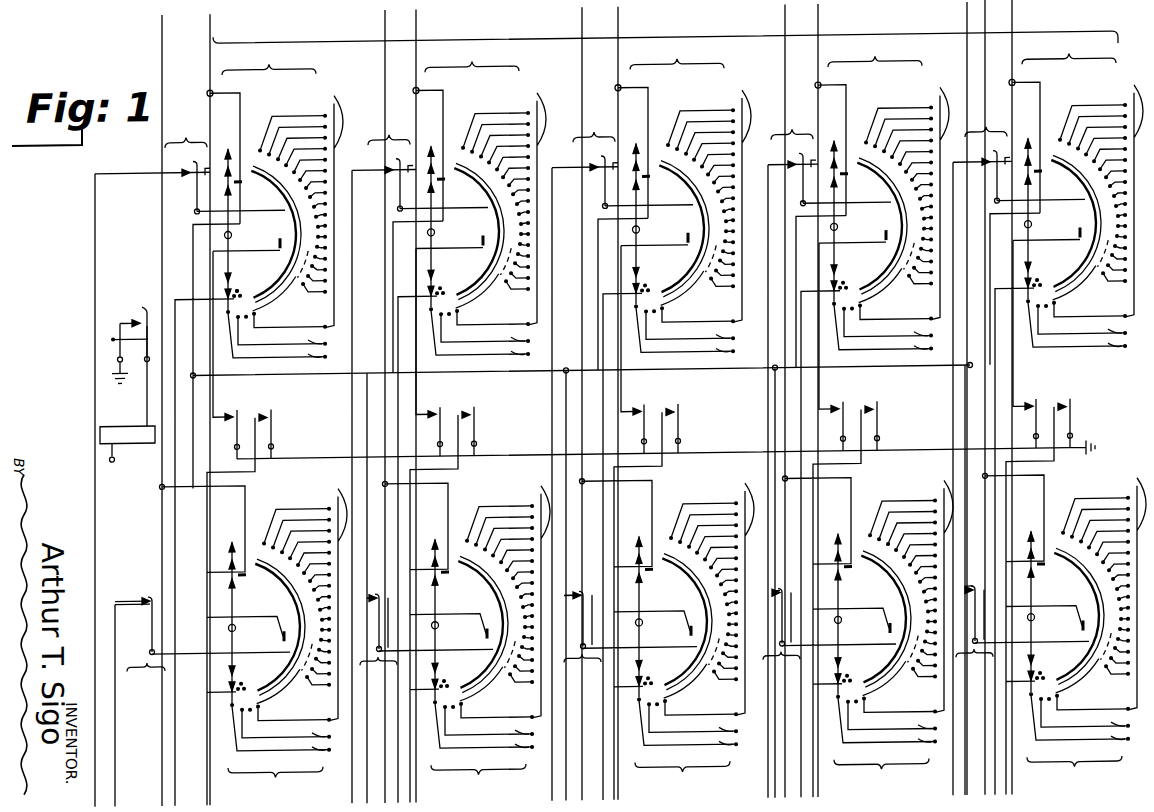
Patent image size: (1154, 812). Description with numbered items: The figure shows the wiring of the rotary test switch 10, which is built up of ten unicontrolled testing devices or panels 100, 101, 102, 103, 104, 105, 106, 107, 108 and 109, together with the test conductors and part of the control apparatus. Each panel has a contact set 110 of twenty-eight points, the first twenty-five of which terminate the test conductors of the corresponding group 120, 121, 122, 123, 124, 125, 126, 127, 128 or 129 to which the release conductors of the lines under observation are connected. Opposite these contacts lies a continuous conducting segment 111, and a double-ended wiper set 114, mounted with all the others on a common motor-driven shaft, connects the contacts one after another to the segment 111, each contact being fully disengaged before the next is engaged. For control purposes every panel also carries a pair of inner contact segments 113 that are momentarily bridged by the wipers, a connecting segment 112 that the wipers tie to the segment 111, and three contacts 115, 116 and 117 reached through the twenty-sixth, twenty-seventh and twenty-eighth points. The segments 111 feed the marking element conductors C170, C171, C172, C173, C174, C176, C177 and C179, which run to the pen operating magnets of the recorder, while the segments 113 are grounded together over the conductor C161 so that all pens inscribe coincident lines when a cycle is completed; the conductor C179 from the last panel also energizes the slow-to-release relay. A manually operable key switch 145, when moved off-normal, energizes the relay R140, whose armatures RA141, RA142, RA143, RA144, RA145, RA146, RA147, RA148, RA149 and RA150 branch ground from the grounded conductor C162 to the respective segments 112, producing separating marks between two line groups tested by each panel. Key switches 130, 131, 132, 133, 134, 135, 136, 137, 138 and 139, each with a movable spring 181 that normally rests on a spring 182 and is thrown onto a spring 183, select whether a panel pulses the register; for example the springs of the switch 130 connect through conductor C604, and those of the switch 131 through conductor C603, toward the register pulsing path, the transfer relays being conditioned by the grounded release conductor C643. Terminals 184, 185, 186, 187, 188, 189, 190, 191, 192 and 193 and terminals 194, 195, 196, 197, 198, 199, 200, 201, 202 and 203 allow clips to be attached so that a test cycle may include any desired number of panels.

The test switch 10 is at (664, 43).
The testing device 100 is at (219, 609).
The testing device 101 is at (245, 428).
The testing device 102 is at (446, 606).
The testing device 103 is at (435, 425).
The testing device 104 is at (647, 604).
The testing device 105 is at (638, 422).
The testing device 106 is at (850, 601).
The testing device 107 is at (845, 420).
The testing device 108 is at (1043, 598).
The testing device 109 is at (1034, 417).
The contact set 110 is at (279, 237).
The conducting segment 111 is at (260, 229).
The connecting segment 112 is at (264, 243).
The additional contact segments 113 is at (252, 191).
The wiper set 114 is at (211, 236).
The contact 115 is at (259, 303).
The contact 116 is at (253, 287).
The contact 117 is at (272, 307).
The test conductor group 120 is at (305, 598).
The test conductor group 121 is at (301, 205).
The test conductor group 122 is at (508, 596).
The test conductor group 123 is at (504, 203).
The test conductor group 124 is at (712, 593).
The test conductor group 125 is at (709, 200).
The test conductor group 126 is at (911, 590).
The test conductor group 127 is at (907, 197).
The test conductor group 128 is at (1104, 588).
The test conductor group 129 is at (1101, 195).
The key switch 130 is at (146, 676).
The key switch 131 is at (186, 134).
The key switch 132 is at (378, 678).
The key switch 133 is at (389, 132).
The key switch 134 is at (582, 675).
The key switch 135 is at (594, 129).
The key switch 136 is at (781, 672).
The key switch 137 is at (792, 126).
The key switch 138 is at (974, 670).
The key switch 139 is at (986, 124).
The key switch 145 is at (108, 338).
The movable spring 181 is at (209, 187).
The spring 182 is at (223, 157).
The spring 183 is at (152, 188).
The terminal 184 is at (300, 731).
The terminal 185 is at (296, 338).
The terminal 186 is at (503, 728).
The terminal 187 is at (499, 335).
The terminal 188 is at (707, 725).
The terminal 189 is at (704, 332).
The terminal 190 is at (906, 723).
The terminal 191 is at (902, 330).
The terminal 192 is at (1099, 720).
The terminal 193 is at (1096, 327).
The terminal 194 is at (300, 746).
The terminal 195 is at (296, 353).
The terminal 196 is at (503, 743).
The terminal 197 is at (499, 350).
The terminal 198 is at (707, 740).
The terminal 199 is at (704, 347).
The terminal 200 is at (906, 738).
The terminal 201 is at (902, 345).
The terminal 202 is at (1099, 735).
The terminal 203 is at (1101, 351).
The conductor C161 is at (968, 54).
The grounded conductor C162 is at (301, 462).
The marking element conductor C170 is at (183, 410).
The marking element conductor C171 is at (211, 29).
The marking element conductor C172 is at (384, 27).
The marking element conductor C173 is at (417, 27).
The marking element conductor C174 is at (581, 27).
The marking element conductor C176 is at (784, 27).
The marking element conductor C177 is at (819, 27).
The marking element conductor C179 is at (1013, 25).
The conductor C603 is at (96, 778).
The conductor C604 is at (110, 736).
The release conductor C643 is at (984, 27).
The relay R140 is at (139, 424).
The armature RA141 is at (218, 435).
The armature RA142 is at (294, 434).
The armature RA143 is at (421, 432).
The armature RA144 is at (497, 431).
The armature RA145 is at (622, 429).
The armature RA146 is at (701, 428).
The armature RA147 is at (823, 427).
The armature RA148 is at (900, 426).
The armature RA149 is at (1017, 424).
The armature RA150 is at (1093, 423).